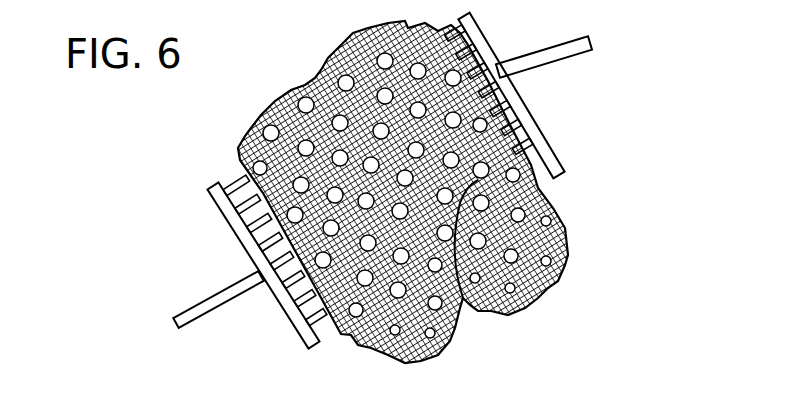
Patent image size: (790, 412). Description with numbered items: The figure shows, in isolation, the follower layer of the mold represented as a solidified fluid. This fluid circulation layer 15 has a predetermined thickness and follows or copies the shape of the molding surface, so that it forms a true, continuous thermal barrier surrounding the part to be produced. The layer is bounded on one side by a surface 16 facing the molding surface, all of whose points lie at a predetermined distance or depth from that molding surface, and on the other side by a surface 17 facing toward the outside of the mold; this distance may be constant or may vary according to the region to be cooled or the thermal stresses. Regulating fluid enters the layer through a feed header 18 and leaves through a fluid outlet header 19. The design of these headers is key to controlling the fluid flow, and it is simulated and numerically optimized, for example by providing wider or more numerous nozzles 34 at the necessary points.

The fluid circulation layer 15 is at (522, 304).
The surface facing the molding surface 16 is at (329, 30).
The surface facing toward the outside of the mold 17 is at (558, 256).
The feed header 18 is at (553, 125).
The fluid outlet header 19 is at (318, 347).
The nozzles 34 is at (213, 173).